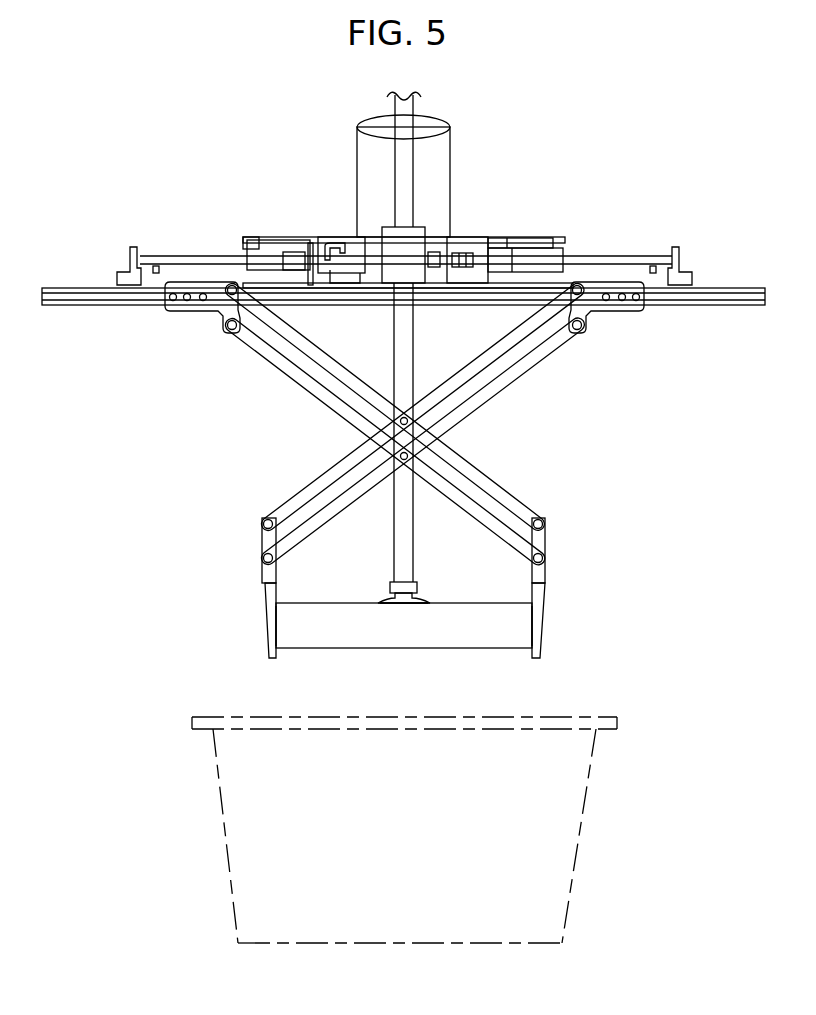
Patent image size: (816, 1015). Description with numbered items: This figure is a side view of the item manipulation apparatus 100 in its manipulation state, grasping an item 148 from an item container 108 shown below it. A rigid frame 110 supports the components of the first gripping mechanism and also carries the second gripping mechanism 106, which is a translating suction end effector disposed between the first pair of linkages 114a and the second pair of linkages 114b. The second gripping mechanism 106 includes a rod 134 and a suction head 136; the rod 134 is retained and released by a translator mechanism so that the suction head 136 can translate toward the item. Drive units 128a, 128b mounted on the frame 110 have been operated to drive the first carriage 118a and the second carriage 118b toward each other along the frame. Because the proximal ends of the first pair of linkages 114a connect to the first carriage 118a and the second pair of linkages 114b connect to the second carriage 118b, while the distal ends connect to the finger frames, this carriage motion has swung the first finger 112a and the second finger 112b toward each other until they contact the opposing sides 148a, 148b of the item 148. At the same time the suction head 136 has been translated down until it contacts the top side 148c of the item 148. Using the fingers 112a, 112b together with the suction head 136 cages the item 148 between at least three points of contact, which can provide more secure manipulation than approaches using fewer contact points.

The item manipulation apparatus 100 is at (518, 126).
The second gripping mechanism 106 is at (357, 111).
The item container 108 is at (584, 807).
The frame 110 is at (757, 288).
The first finger 112a is at (546, 590).
The second finger 112b is at (263, 590).
The first pair of linkages 114a is at (501, 462).
The second pair of linkages 114b is at (301, 474).
The first carriage 118a is at (181, 306).
The second carriage 118b is at (628, 306).
The drive unit 128a is at (528, 252).
The drive unit 128b is at (271, 252).
The rod 134 is at (407, 350).
The suction head 136 is at (421, 603).
The item 148 is at (430, 637).
The opposing side of the item 148a is at (530, 628).
The opposing side of the item 148b is at (268, 628).
The top side of the item 148c is at (364, 601).